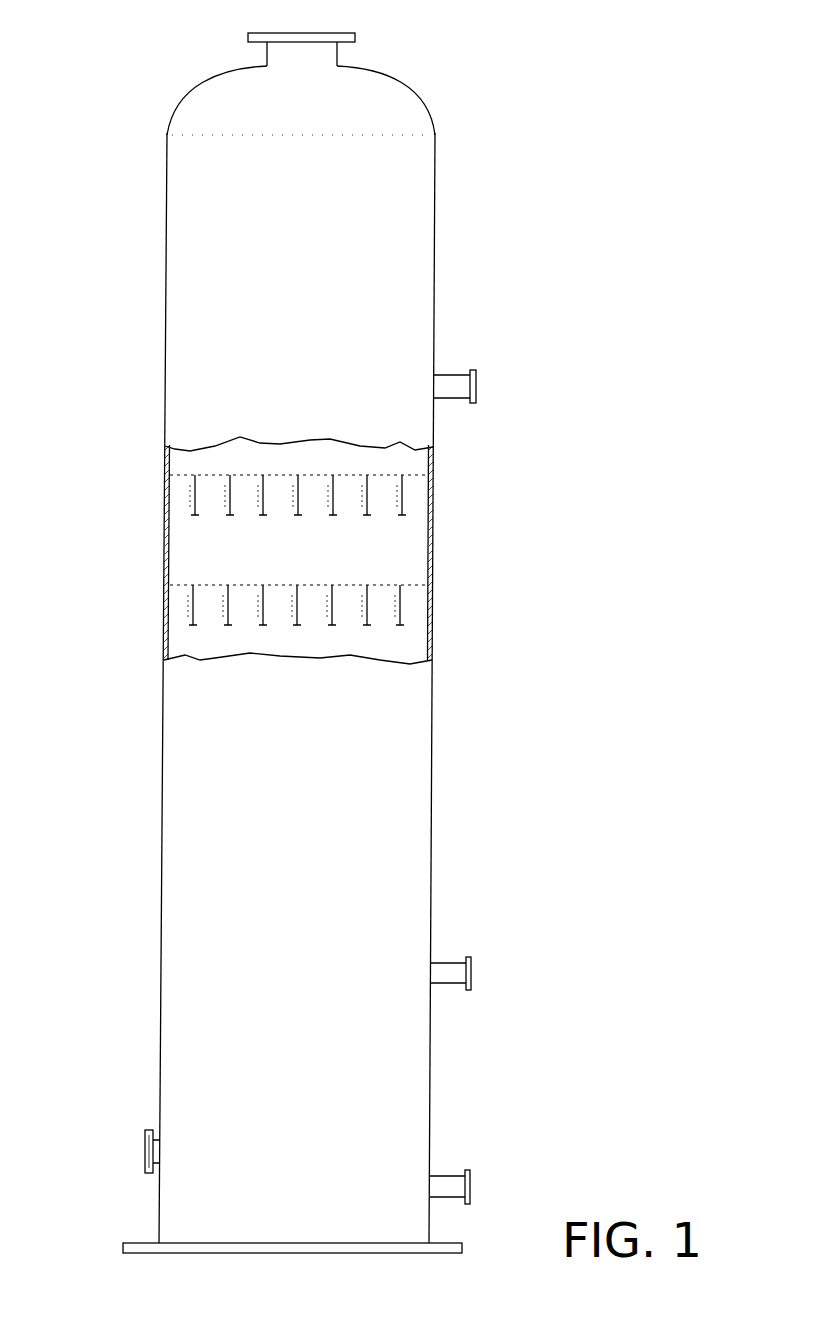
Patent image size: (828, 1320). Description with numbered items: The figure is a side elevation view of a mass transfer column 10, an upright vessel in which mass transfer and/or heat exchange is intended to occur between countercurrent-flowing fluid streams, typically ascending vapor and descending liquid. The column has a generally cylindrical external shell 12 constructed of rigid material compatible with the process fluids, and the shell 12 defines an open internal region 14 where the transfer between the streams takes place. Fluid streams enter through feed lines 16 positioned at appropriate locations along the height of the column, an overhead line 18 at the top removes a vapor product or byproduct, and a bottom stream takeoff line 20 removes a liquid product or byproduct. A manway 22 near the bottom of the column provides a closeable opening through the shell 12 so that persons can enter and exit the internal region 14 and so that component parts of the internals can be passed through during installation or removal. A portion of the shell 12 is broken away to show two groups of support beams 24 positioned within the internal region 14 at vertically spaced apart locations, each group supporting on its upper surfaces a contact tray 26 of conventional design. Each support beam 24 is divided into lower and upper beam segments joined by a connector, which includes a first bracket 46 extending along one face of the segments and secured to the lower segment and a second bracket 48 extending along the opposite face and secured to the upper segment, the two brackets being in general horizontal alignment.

The mass transfer column 10 is at (424, 259).
The shell 12 is at (435, 533).
The internal region 14 is at (402, 554).
The feed lines 16 is at (453, 373).
The overhead line 18 is at (346, 33).
The bottom stream takeoff line 20 is at (448, 1175).
The manway 22 is at (150, 1130).
The support beams 24 is at (404, 505).
The contact tray 26 is at (420, 474).
The first bracket 46 is at (370, 612).
The second bracket 48 is at (362, 602).